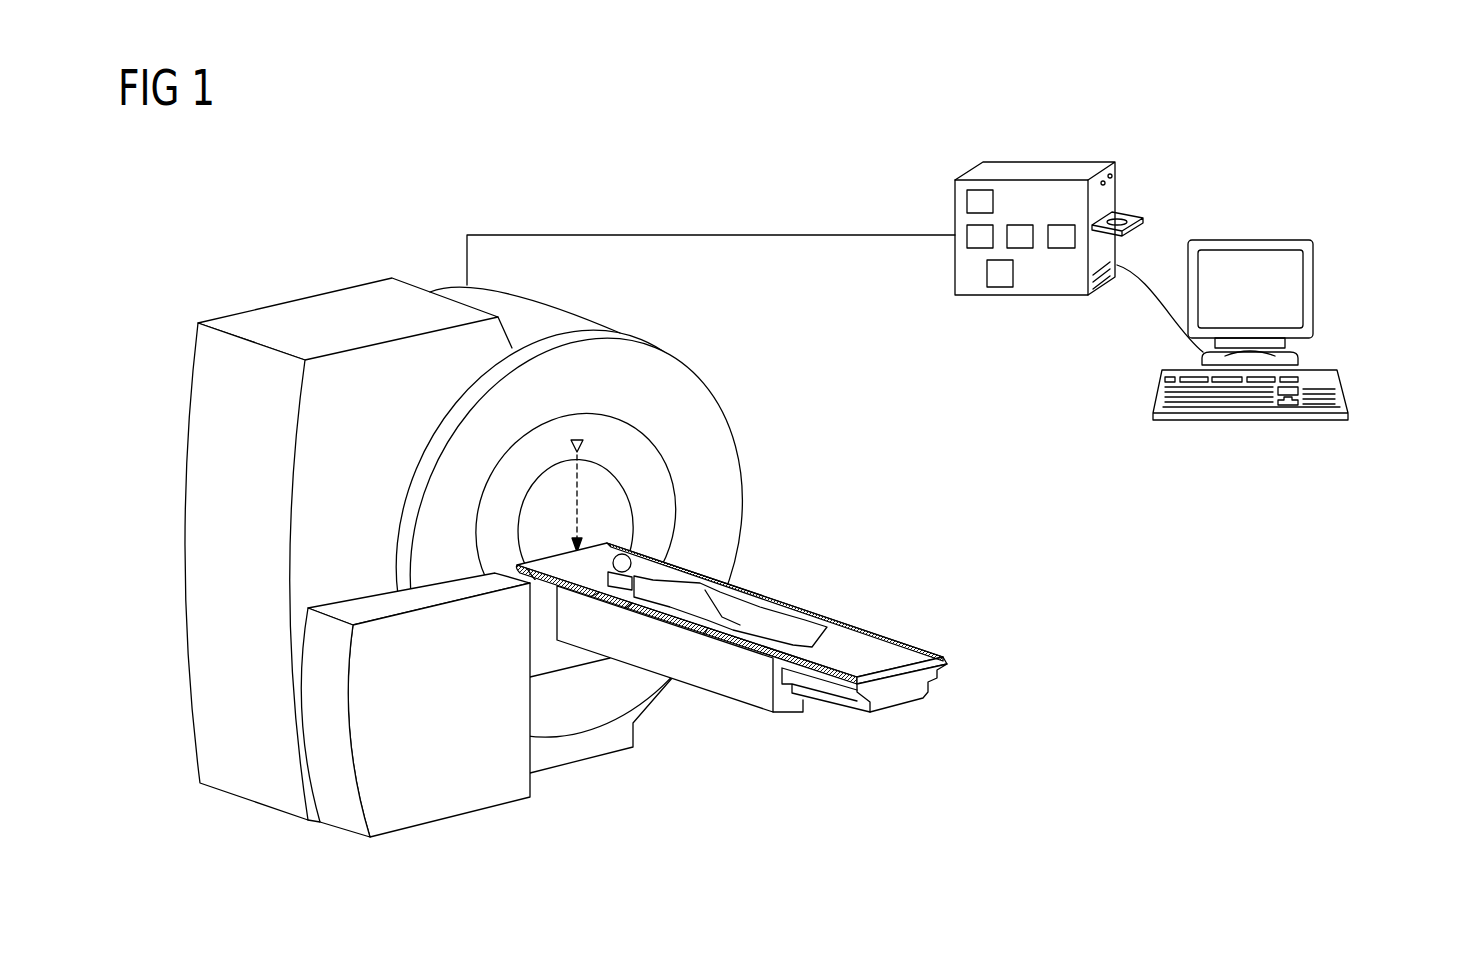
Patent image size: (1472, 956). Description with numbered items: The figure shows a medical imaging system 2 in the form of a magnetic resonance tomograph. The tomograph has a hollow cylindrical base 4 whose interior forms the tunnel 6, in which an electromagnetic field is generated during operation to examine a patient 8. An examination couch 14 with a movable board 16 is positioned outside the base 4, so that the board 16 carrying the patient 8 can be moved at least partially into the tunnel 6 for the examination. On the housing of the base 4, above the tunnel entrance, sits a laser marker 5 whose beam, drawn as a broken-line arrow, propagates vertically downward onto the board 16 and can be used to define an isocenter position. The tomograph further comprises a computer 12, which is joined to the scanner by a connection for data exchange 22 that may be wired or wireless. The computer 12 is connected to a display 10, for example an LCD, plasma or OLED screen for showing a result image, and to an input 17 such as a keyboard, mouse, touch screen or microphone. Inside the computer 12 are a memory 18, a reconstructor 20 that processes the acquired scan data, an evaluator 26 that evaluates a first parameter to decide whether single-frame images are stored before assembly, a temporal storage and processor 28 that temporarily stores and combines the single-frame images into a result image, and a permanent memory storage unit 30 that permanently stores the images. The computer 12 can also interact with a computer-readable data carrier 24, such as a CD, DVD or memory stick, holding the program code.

The medical imaging system 2 is at (542, 523).
The hollow cylindrical base 4 is at (698, 395).
The laser marker 5 is at (581, 453).
The tunnel 6 is at (598, 502).
The patient 8 is at (737, 598).
The display 10 is at (1252, 245).
The computer 12 is at (962, 218).
The examination couch 14 is at (747, 680).
The movable board 16 is at (897, 693).
The input 17 is at (1243, 407).
The memory 18 is at (967, 201).
The reconstructor 20 is at (957, 243).
The connection for data exchange 22 is at (672, 232).
The computer-readable data carrier 24 is at (1125, 218).
The evaluator 26 is at (1020, 224).
The temporal storage and processor 28 is at (1048, 246).
The permanent memory storage unit 30 is at (1002, 288).